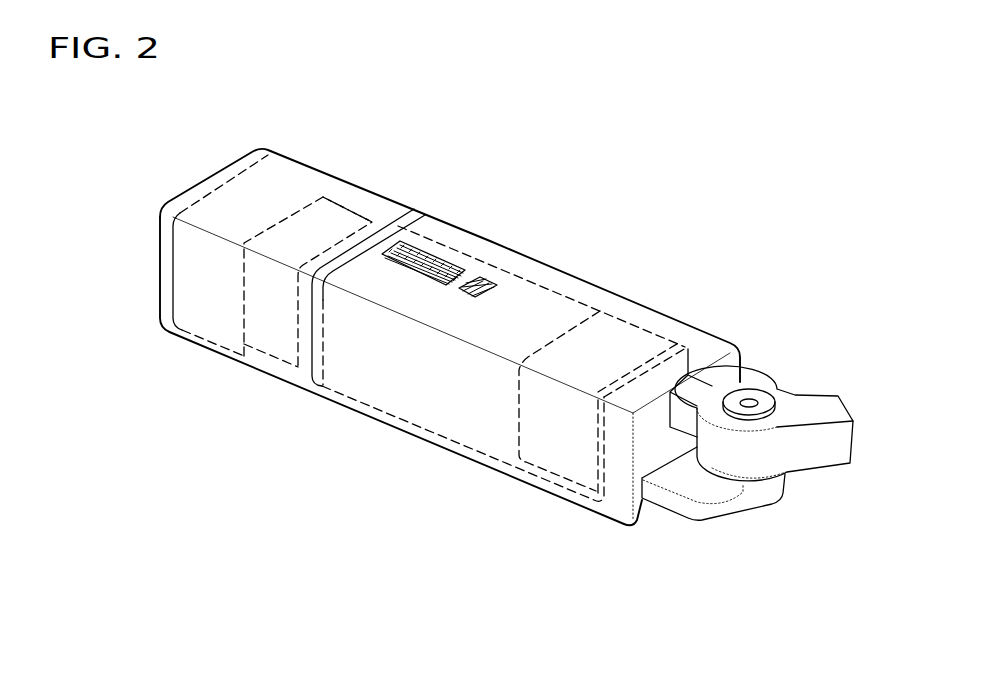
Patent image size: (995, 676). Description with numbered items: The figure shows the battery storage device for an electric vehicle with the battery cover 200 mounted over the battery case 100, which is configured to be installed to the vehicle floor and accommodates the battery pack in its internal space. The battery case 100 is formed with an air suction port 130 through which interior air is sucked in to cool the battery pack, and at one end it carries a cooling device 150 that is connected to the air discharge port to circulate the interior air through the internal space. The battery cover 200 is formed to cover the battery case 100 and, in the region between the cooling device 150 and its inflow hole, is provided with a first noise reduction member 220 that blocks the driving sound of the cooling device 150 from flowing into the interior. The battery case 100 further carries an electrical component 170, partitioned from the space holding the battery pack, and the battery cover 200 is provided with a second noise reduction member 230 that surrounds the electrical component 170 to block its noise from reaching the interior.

The battery case 100 is at (578, 296).
The air suction port 130 is at (427, 256).
The cooling device 150 is at (758, 397).
The electrical component 170 is at (350, 206).
The battery cover 200 is at (381, 458).
The first noise reduction member 220 is at (553, 463).
The second noise reduction member 230 is at (225, 312).